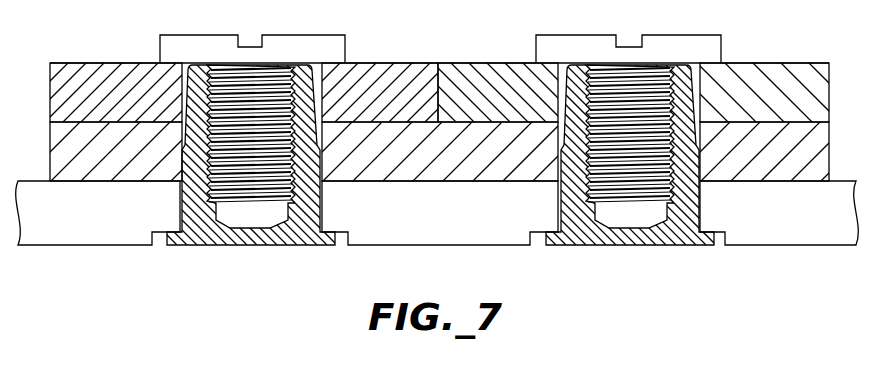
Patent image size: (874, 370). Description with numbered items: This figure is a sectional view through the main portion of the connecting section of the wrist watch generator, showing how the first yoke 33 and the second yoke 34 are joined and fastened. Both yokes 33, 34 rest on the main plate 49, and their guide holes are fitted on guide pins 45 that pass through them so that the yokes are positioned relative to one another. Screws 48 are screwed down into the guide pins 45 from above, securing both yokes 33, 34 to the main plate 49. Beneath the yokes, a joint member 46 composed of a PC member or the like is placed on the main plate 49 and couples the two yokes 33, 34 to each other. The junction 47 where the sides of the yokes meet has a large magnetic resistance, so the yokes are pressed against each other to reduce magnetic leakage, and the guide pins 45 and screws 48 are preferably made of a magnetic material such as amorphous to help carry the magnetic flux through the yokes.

The first yoke 33 is at (743, 78).
The second yoke 34 is at (77, 66).
The guide pin 45 is at (305, 237).
The joint member 46 is at (497, 173).
The junction 47 is at (441, 98).
The screw 48 is at (292, 47).
The main plate 49 is at (70, 235).